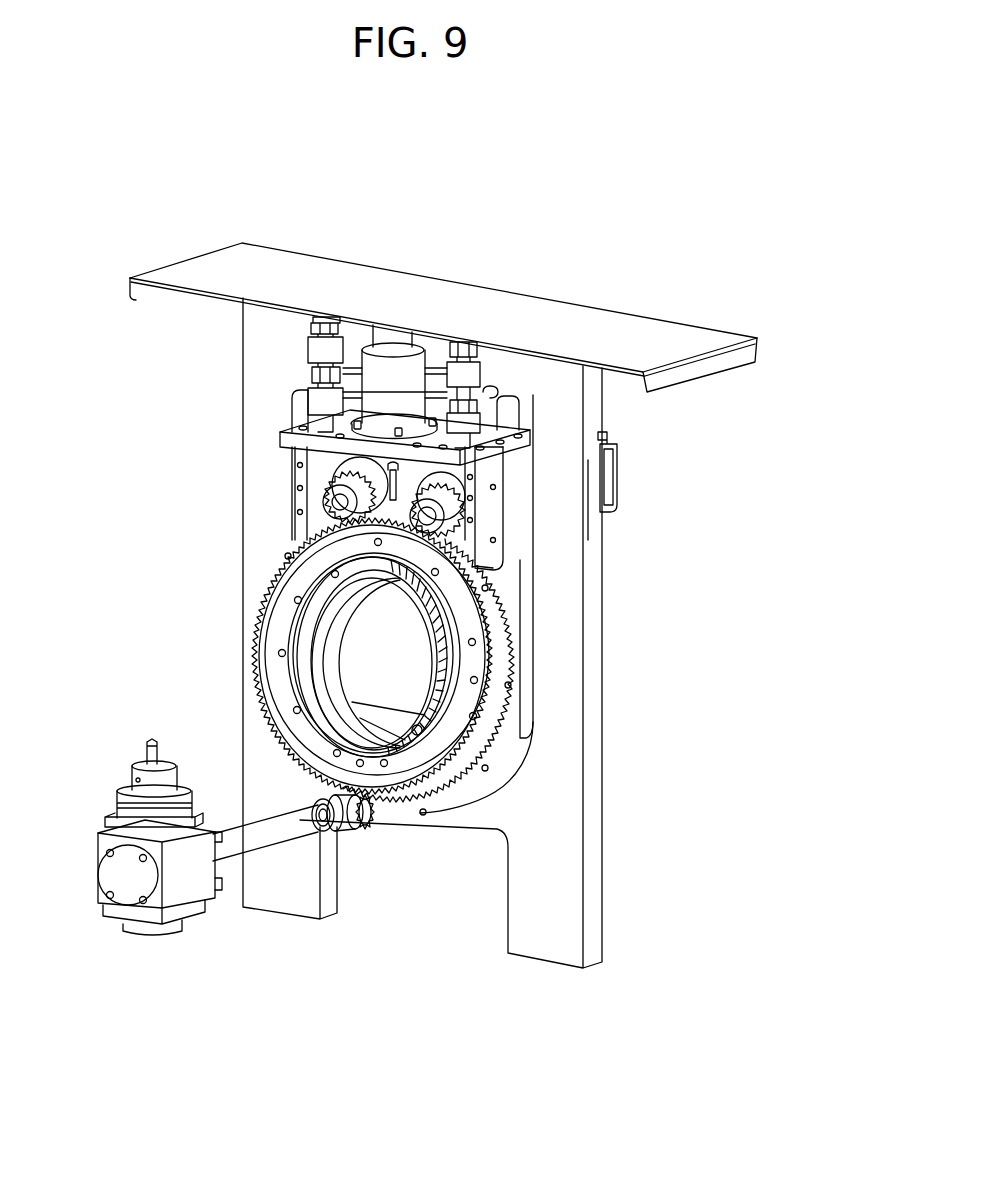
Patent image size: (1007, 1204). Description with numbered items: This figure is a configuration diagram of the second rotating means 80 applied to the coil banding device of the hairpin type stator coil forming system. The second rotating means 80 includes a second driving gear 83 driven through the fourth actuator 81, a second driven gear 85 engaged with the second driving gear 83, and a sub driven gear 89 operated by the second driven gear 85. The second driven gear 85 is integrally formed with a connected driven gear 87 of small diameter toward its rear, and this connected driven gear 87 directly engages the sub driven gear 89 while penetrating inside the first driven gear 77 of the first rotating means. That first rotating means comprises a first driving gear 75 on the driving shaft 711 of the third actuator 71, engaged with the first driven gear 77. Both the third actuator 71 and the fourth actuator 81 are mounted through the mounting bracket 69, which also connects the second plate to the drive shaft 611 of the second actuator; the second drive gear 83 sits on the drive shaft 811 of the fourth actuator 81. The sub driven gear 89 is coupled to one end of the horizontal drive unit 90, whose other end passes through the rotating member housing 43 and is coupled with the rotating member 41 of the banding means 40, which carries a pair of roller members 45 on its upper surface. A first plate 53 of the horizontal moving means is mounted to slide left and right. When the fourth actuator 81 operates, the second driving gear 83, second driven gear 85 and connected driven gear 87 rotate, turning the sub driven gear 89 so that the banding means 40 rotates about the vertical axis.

The banding means 40 is at (155, 882).
The rotating member 41 is at (118, 800).
The rotating member housing 43 is at (135, 886).
The roller members 45 is at (157, 750).
The first plate 53 is at (555, 793).
The drive shaft of the second actuator 611 is at (390, 340).
The mounting bracket 69 is at (494, 478).
The third actuator 71 is at (491, 420).
The driving shaft of the third actuator 711 is at (339, 501).
The first driving gear 75 is at (322, 478).
The first driven gear 77 is at (488, 617).
The second rotating means 80 is at (494, 710).
The fourth actuator 81 is at (610, 470).
The drive shaft of the fourth actuator 811 is at (496, 538).
The second driving gear 83 is at (445, 512).
The second driven gear 85 is at (490, 567).
The connected driven gear 87 is at (450, 668).
The sub driven gear 89 is at (366, 828).
The horizontal drive unit 90 is at (262, 835).